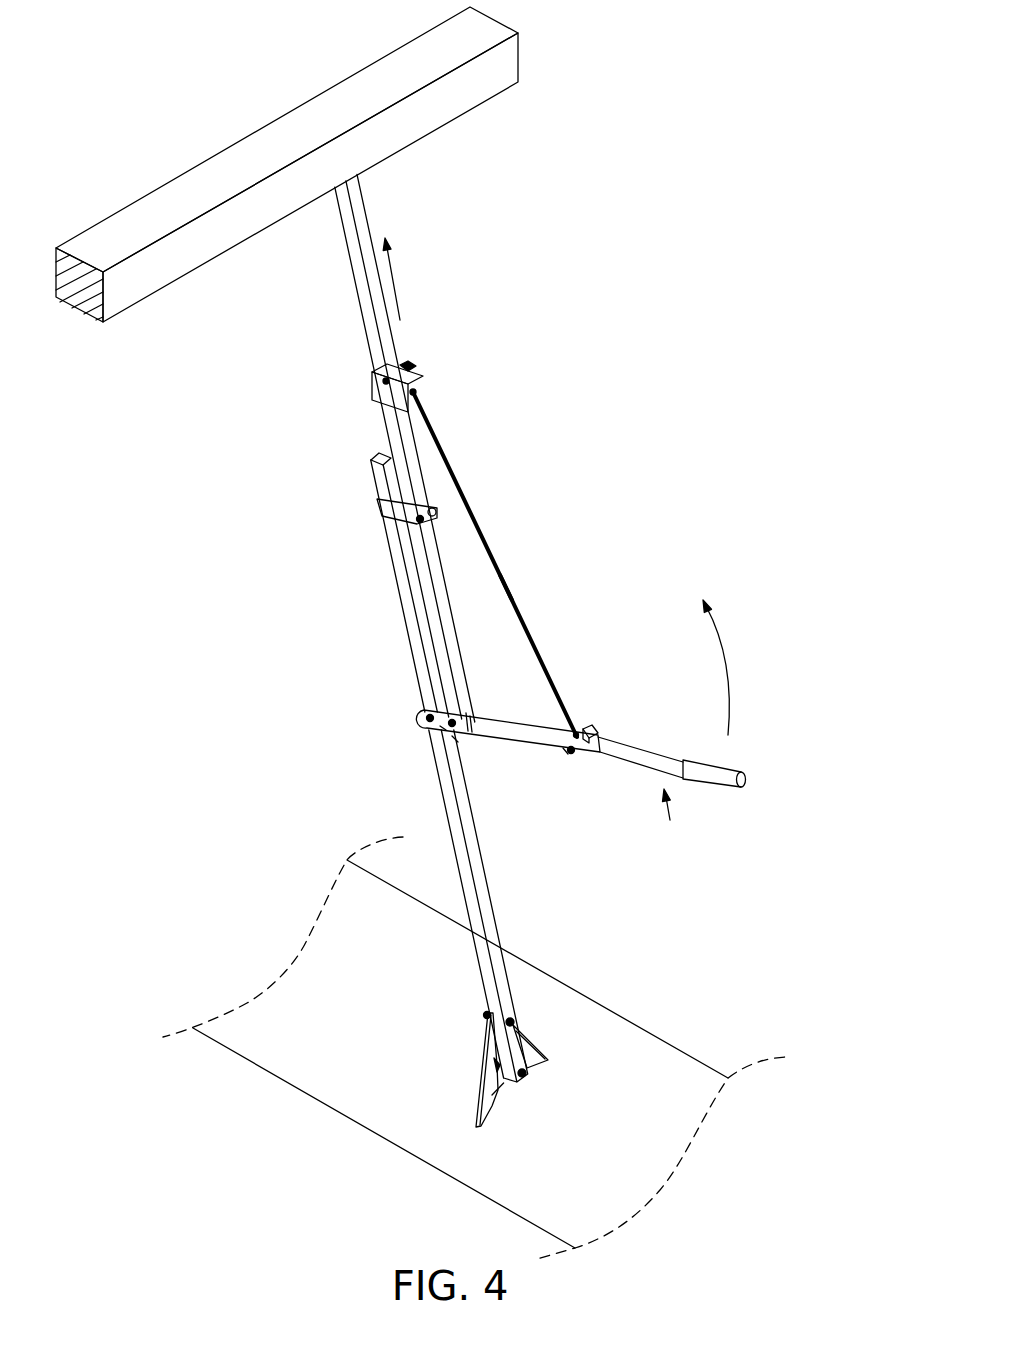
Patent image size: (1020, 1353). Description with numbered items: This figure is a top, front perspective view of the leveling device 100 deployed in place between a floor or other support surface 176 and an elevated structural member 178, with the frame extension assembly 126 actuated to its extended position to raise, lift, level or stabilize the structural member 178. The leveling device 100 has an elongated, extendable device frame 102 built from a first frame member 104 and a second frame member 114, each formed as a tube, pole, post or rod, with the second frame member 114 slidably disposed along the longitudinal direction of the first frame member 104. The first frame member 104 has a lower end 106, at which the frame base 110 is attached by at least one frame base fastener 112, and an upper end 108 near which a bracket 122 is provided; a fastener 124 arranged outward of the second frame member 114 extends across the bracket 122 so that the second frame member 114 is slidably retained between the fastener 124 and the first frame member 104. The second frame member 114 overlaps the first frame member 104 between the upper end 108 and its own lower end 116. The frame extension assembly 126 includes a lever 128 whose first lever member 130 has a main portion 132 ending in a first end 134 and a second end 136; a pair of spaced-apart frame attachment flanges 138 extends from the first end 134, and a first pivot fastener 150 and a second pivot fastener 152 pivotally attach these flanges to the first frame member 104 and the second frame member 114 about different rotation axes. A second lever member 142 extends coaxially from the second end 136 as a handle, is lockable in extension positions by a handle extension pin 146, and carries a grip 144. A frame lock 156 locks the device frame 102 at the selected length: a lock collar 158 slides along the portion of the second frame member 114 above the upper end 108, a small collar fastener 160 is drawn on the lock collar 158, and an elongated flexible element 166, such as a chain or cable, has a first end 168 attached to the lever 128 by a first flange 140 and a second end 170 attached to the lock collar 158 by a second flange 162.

The leveling device 100 is at (565, 350).
The device frame 102 is at (386, 201).
The first frame member 104 is at (494, 912).
The lower end 106 is at (510, 1082).
The upper end 108 is at (378, 460).
The frame base 110 is at (478, 1097).
The frame base fastener 112 is at (512, 1020).
The second frame member 114 is at (350, 250).
The lower end 116 is at (455, 740).
The bracket 122 is at (378, 508).
The fastener 124 is at (418, 522).
The frame extension assembly 126 is at (742, 585).
The lever 128 is at (670, 820).
The first lever member 130 is at (504, 752).
The main portion 132 is at (483, 738).
The first end 134 is at (468, 712).
The second end 136 is at (590, 732).
The frame attachment flanges 138 is at (452, 724).
The first flange 140 is at (572, 755).
The second lever member 142 is at (640, 758).
The grip 144 is at (742, 770).
The handle extension pin 146 is at (566, 745).
The first pivot fastener 150 is at (430, 716).
The second pivot fastener 152 is at (445, 728).
The frame lock 156 is at (497, 523).
The lock collar 158 is at (372, 392).
The bracket fastener 160 is at (386, 381).
The second flange 162 is at (413, 368).
The elongated flexible element 166 is at (543, 590).
The first end 168 is at (580, 733).
The second end 170 is at (414, 392).
The support surface 176 is at (665, 1067).
The structural member 178 is at (205, 190).